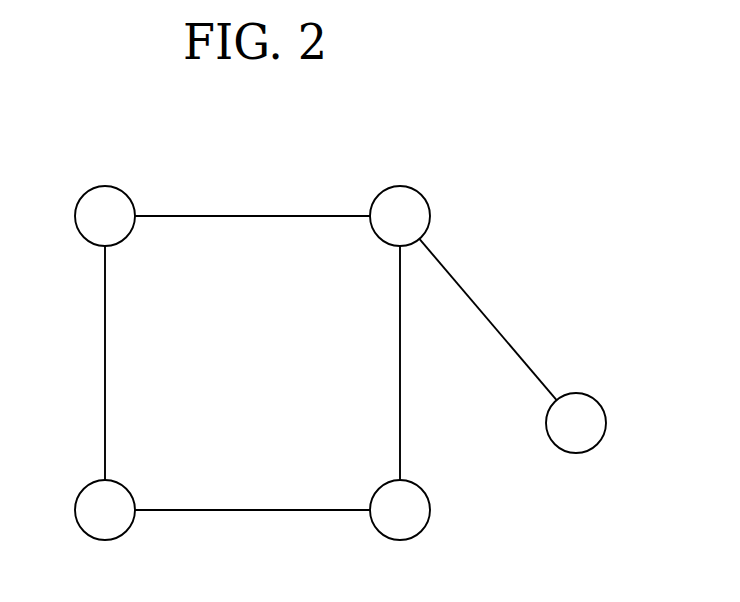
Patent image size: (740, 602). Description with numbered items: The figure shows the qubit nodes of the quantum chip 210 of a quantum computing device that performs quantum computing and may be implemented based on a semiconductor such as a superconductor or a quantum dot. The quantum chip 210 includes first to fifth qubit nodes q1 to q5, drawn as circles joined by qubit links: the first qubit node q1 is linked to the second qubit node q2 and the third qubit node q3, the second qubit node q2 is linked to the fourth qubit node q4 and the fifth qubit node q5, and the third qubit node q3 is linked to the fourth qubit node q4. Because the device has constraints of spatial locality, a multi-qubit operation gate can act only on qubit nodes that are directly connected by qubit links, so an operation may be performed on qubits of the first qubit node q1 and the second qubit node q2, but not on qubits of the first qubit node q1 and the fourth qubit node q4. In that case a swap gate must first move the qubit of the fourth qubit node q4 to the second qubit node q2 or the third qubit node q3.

The quantum chip 210 is at (554, 150).
The first qubit node q1 is at (105, 216).
The second qubit node q2 is at (400, 216).
The third qubit node q3 is at (105, 510).
The fourth qubit node q4 is at (400, 510).
The fifth qubit node q5 is at (576, 423).